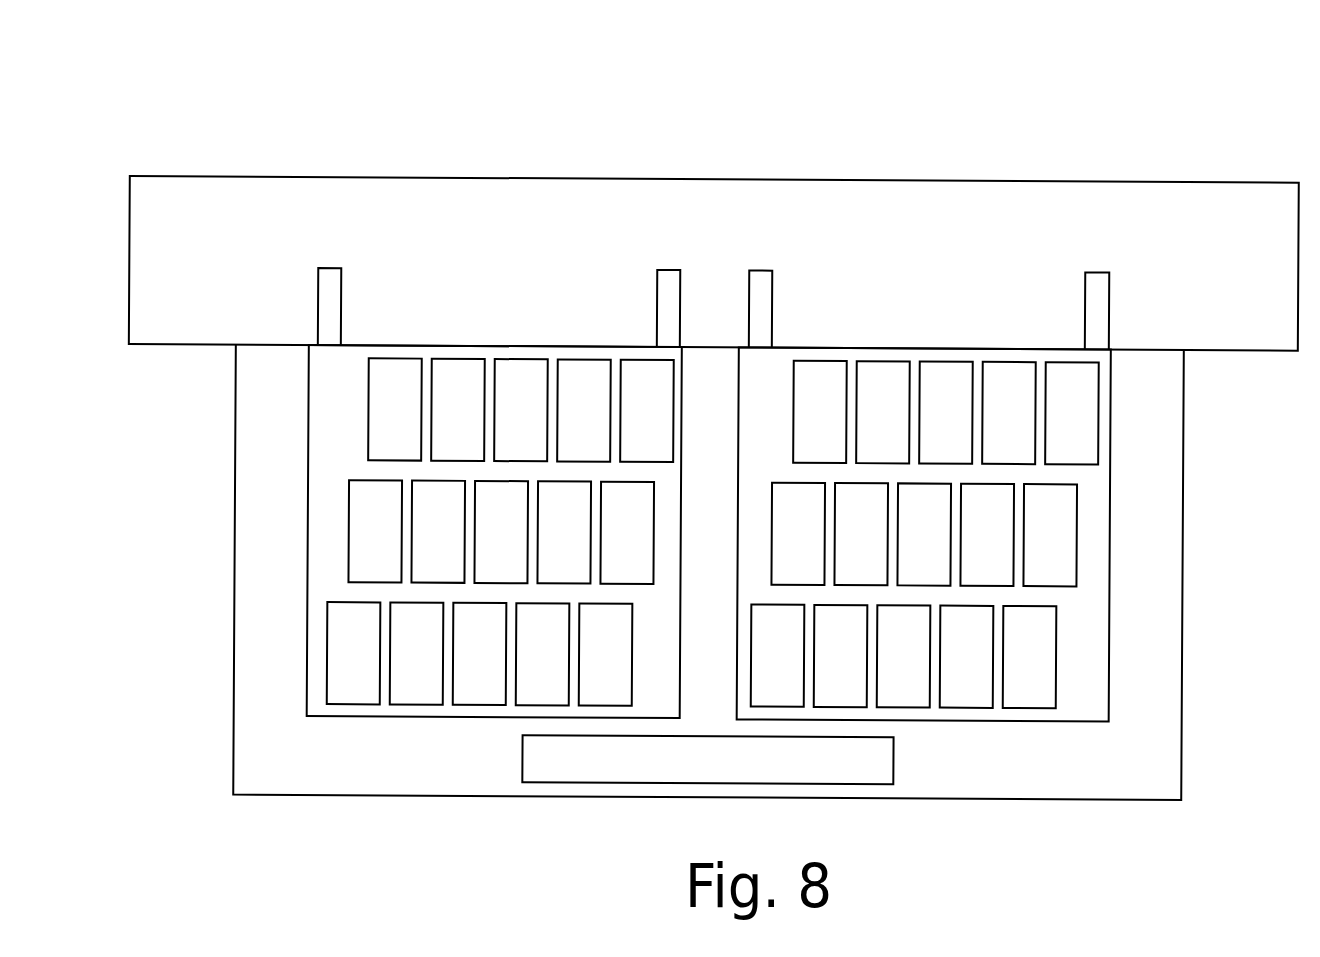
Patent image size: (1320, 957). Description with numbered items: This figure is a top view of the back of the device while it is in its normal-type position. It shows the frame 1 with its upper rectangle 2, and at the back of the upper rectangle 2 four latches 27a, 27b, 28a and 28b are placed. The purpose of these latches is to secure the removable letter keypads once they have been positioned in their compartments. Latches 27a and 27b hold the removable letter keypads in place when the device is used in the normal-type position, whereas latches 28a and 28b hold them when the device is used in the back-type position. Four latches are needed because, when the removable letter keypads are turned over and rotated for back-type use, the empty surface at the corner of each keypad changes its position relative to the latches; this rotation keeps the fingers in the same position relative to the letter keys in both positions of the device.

The frame 1 is at (215, 178).
The upper rectangle 2 is at (182, 288).
The latch 27a is at (330, 280).
The latch 28a is at (667, 278).
The latch 27b is at (760, 278).
The latch 28b is at (1097, 283).